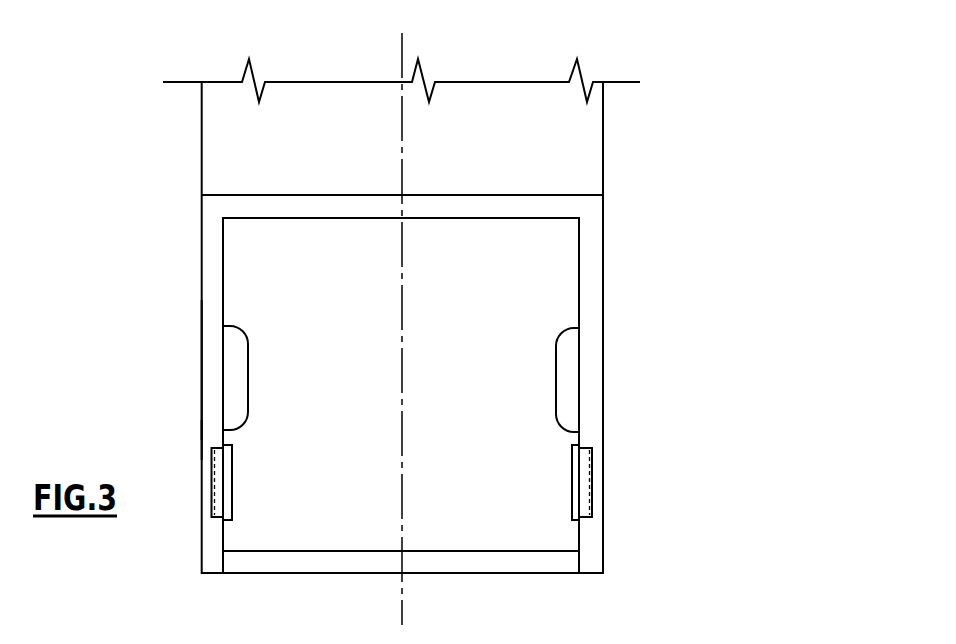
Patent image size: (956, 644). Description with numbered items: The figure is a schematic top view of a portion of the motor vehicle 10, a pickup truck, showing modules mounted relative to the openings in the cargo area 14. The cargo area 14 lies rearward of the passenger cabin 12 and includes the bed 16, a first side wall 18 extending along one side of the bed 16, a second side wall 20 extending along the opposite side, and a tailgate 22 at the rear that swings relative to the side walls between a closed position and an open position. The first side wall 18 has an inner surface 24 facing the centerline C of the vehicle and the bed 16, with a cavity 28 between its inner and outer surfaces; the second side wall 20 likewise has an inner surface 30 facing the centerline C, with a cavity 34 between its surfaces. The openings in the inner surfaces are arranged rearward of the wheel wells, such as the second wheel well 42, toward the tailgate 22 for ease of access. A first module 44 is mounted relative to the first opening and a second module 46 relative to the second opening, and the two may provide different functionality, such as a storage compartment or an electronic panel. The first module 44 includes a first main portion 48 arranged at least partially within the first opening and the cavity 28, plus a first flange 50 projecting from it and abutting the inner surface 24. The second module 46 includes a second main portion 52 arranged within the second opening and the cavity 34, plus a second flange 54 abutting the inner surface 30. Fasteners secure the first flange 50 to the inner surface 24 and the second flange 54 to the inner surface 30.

The motor vehicle 10 is at (754, 130).
The passenger cabin 12 is at (623, 147).
The cargo area 14 is at (655, 273).
The bed 16 is at (459, 370).
The first side wall 18 is at (593, 424).
The second side wall 20 is at (214, 371).
The tailgate 22 is at (484, 567).
The inner surface 24 is at (578, 287).
The cavity 28 is at (595, 333).
The inner surface 30 is at (225, 280).
The cavity 34 is at (209, 433).
The second wheel well 42 is at (237, 377).
The first module 44 is at (572, 490).
The second module 46 is at (233, 483).
The first main portion 48 is at (587, 480).
The first flange 50 is at (577, 445).
The second main portion 52 is at (215, 495).
The second flange 54 is at (228, 445).
The centerline C is at (400, 597).